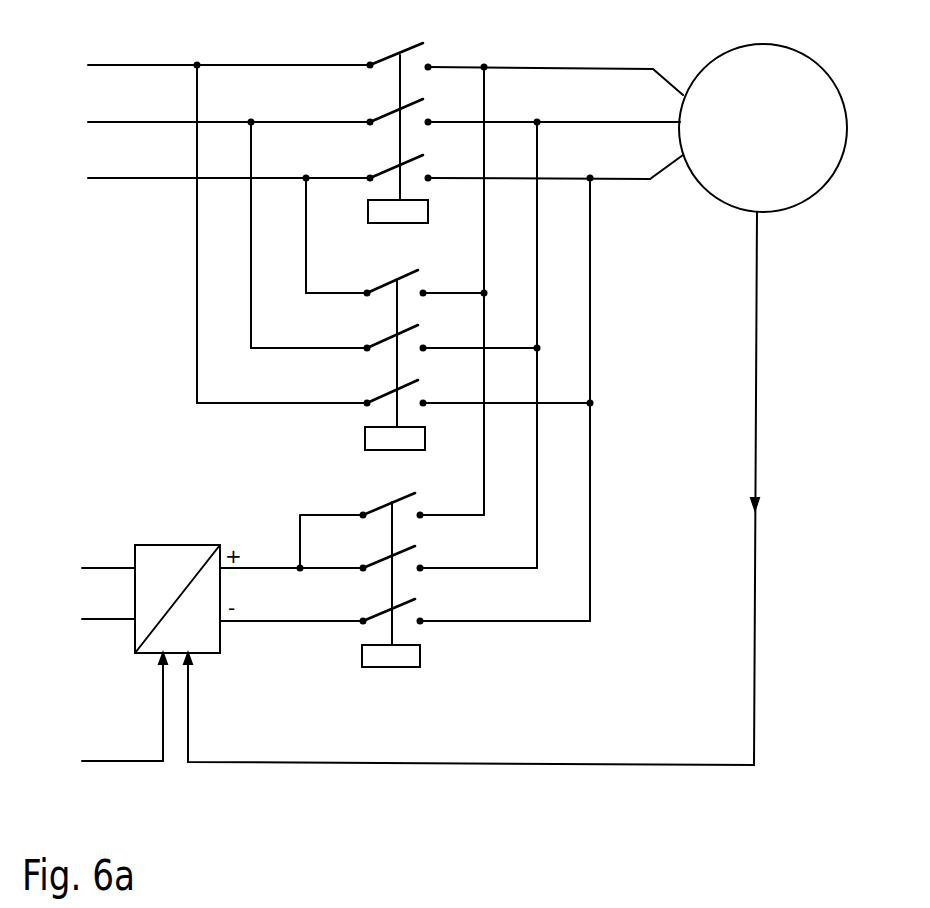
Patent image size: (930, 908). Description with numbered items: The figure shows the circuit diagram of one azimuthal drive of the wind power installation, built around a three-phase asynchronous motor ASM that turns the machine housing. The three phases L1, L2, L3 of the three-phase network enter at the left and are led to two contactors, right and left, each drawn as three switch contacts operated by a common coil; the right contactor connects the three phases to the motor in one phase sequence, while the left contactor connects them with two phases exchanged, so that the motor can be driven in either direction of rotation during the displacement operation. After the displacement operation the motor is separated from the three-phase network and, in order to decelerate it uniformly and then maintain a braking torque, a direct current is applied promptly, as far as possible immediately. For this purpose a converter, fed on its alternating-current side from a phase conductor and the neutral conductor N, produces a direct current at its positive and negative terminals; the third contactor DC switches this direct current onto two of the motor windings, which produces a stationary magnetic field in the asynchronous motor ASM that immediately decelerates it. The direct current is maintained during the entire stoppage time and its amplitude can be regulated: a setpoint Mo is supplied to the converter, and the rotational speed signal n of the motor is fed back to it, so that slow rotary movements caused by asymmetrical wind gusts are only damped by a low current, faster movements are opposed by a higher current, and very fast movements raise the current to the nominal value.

The mains phase L1 is at (211, 229).
The mains phase L2 is at (211, 229).
The mains phase L3 is at (211, 230).
The right-rotation contactor right is at (399, 147).
The left-rotation contactor left is at (395, 373).
The direct-current contactor DC is at (405, 595).
The three-phase asynchronous motor ASM is at (763, 128).
The neutral conductor N is at (81, 621).
The torque setpoint input Mo is at (101, 713).
The speed signal n is at (483, 488).